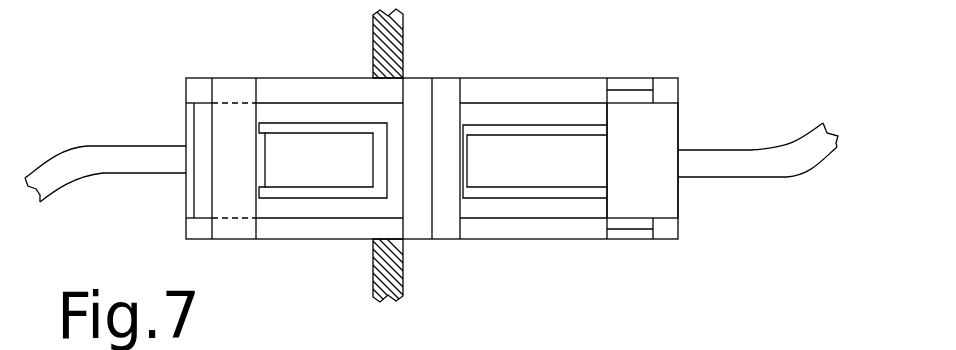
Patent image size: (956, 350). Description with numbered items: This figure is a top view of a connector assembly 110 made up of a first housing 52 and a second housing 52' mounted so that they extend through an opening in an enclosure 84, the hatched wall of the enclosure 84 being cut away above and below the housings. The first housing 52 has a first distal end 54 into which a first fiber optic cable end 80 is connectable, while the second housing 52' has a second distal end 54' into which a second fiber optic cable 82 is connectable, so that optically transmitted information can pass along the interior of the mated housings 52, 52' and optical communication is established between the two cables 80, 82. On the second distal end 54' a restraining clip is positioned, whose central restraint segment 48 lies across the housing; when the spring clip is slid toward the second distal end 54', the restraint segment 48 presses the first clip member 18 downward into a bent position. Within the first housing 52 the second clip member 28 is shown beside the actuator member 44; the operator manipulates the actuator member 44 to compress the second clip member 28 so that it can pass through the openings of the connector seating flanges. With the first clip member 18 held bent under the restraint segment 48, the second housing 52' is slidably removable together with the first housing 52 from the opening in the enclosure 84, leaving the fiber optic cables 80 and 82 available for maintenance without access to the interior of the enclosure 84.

The connector assembly 110 is at (206, 62).
The distal end of connector housing 54' is at (148, 147).
The central restraint segment 48 is at (246, 152).
The first clip member 18 is at (338, 174).
The enclosure 84 is at (403, 52).
The second clip member 28 is at (540, 174).
The first housing 52 is at (560, 155).
The second housing 52' is at (344, 188).
The actuator member 44 is at (656, 174).
The first fiber optic cable end 80 is at (770, 145).
The first distal end 54 is at (692, 158).
The second fiber optic cable 82 is at (103, 170).